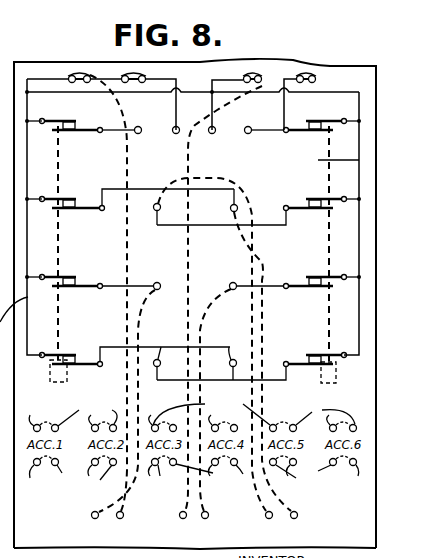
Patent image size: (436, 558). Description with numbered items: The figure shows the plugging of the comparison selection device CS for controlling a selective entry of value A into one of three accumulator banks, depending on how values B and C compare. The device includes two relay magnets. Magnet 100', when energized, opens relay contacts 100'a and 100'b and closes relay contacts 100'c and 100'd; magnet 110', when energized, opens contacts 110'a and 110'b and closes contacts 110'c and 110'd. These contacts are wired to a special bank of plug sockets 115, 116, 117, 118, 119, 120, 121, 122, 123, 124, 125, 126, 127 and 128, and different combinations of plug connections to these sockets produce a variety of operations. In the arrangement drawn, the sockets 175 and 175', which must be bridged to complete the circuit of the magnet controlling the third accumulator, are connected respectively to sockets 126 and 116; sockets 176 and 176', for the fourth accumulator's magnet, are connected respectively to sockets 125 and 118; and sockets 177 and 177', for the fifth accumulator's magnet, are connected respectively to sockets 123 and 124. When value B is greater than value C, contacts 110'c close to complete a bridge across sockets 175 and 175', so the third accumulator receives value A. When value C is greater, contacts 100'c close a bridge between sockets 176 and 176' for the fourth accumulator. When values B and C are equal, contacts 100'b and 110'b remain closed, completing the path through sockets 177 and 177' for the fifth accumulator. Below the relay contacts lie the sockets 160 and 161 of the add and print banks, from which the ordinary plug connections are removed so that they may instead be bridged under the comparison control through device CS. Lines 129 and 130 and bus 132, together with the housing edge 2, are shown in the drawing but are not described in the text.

The controller housing 2 is at (14, 255).
The plug socket 115 is at (146, 73).
The plug socket 116 is at (78, 74).
The plug socket 117 is at (308, 75).
The plug socket 118 is at (251, 75).
The plug socket 119 is at (173, 133).
The plug socket 120 is at (211, 134).
The plug socket 121 is at (249, 127).
The plug socket 122 is at (140, 127).
The plug socket 123 is at (237, 205).
The plug socket 124 is at (153, 204).
The plug socket 125 is at (230, 284).
The plug socket 126 is at (162, 273).
The plug socket 127 is at (233, 351).
The plug socket 128 is at (166, 353).
The accessory supply lead 129 is at (206, 411).
The accessory supply lead 130 is at (148, 411).
The supply bus 132 is at (323, 160).
The socket 160 is at (212, 480).
The socket 161 is at (176, 481).
The plug socket 175 is at (129, 528).
The plug socket 175' is at (74, 528).
The plug socket 176 is at (220, 528).
The plug socket 176' is at (182, 529).
The plug socket 177 is at (322, 511).
The plug socket 177' is at (282, 529).
The relay contacts 110'a is at (65, 116).
The relay contacts 110'b is at (130, 189).
The relay contacts 110'c is at (70, 272).
The relay contacts 110'd is at (135, 345).
The magnet 110' is at (80, 260).
The relay contacts 100'a is at (322, 115).
The relay contacts 100'b is at (258, 201).
The relay contacts 100'c is at (320, 269).
The relay contacts 100'd is at (252, 351).
The magnet 100' is at (345, 266).